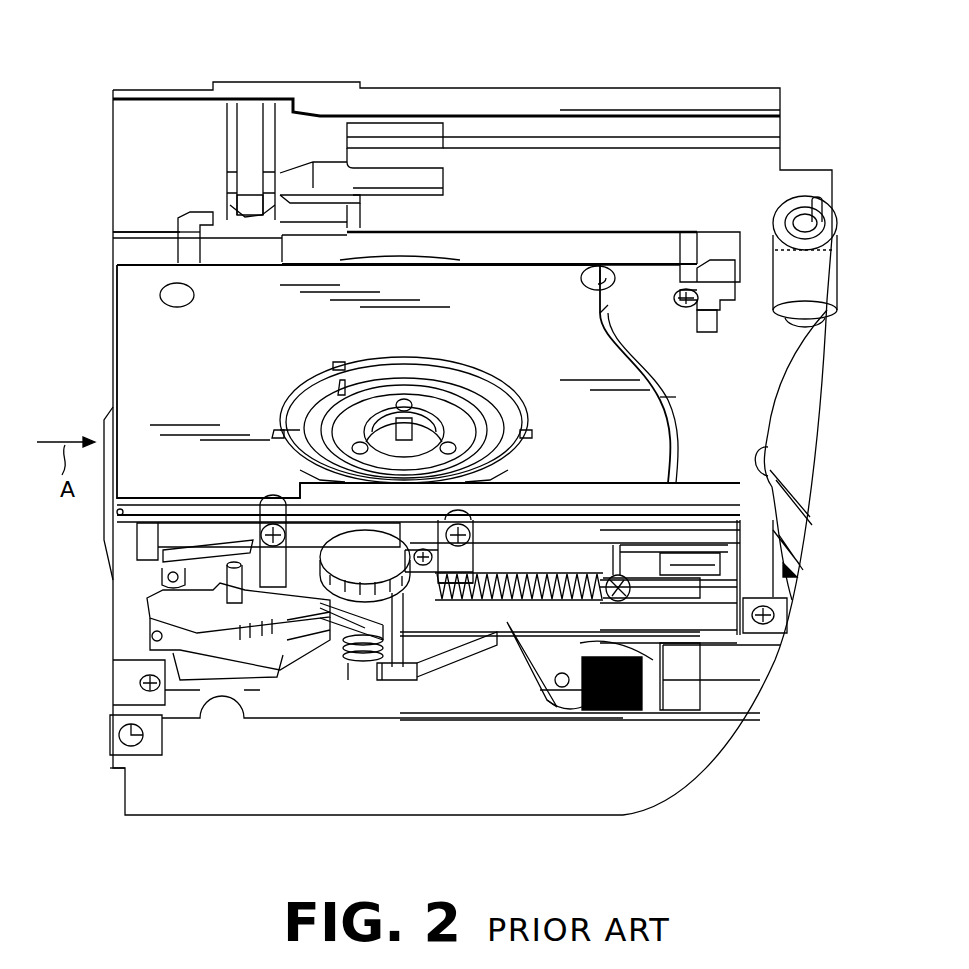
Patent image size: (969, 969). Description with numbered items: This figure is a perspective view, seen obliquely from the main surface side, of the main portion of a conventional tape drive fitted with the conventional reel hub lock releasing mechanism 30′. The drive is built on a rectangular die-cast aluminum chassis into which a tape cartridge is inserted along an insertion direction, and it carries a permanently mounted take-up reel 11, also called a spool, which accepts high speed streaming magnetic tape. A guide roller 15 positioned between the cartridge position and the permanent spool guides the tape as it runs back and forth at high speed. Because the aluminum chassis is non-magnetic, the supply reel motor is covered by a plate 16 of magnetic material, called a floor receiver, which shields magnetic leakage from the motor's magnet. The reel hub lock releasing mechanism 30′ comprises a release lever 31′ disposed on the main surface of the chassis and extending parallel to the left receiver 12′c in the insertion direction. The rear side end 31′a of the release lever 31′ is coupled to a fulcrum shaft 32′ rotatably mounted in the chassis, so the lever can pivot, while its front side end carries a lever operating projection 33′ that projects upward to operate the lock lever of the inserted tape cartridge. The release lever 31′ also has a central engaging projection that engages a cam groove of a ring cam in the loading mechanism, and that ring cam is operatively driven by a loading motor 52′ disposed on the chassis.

The take-up reel 11 is at (790, 450).
The left receiver 12′c is at (180, 123).
The lever operating projection 33′ is at (190, 222).
The release lever 31′ is at (497, 248).
The reel hub lock releasing mechanism 30′ is at (538, 223).
The rear side end 31′a is at (690, 243).
The fulcrum shaft 32′ is at (708, 297).
The guide roller 15 is at (790, 207).
The plate 16 is at (152, 338).
The loading motor 52′ is at (697, 660).